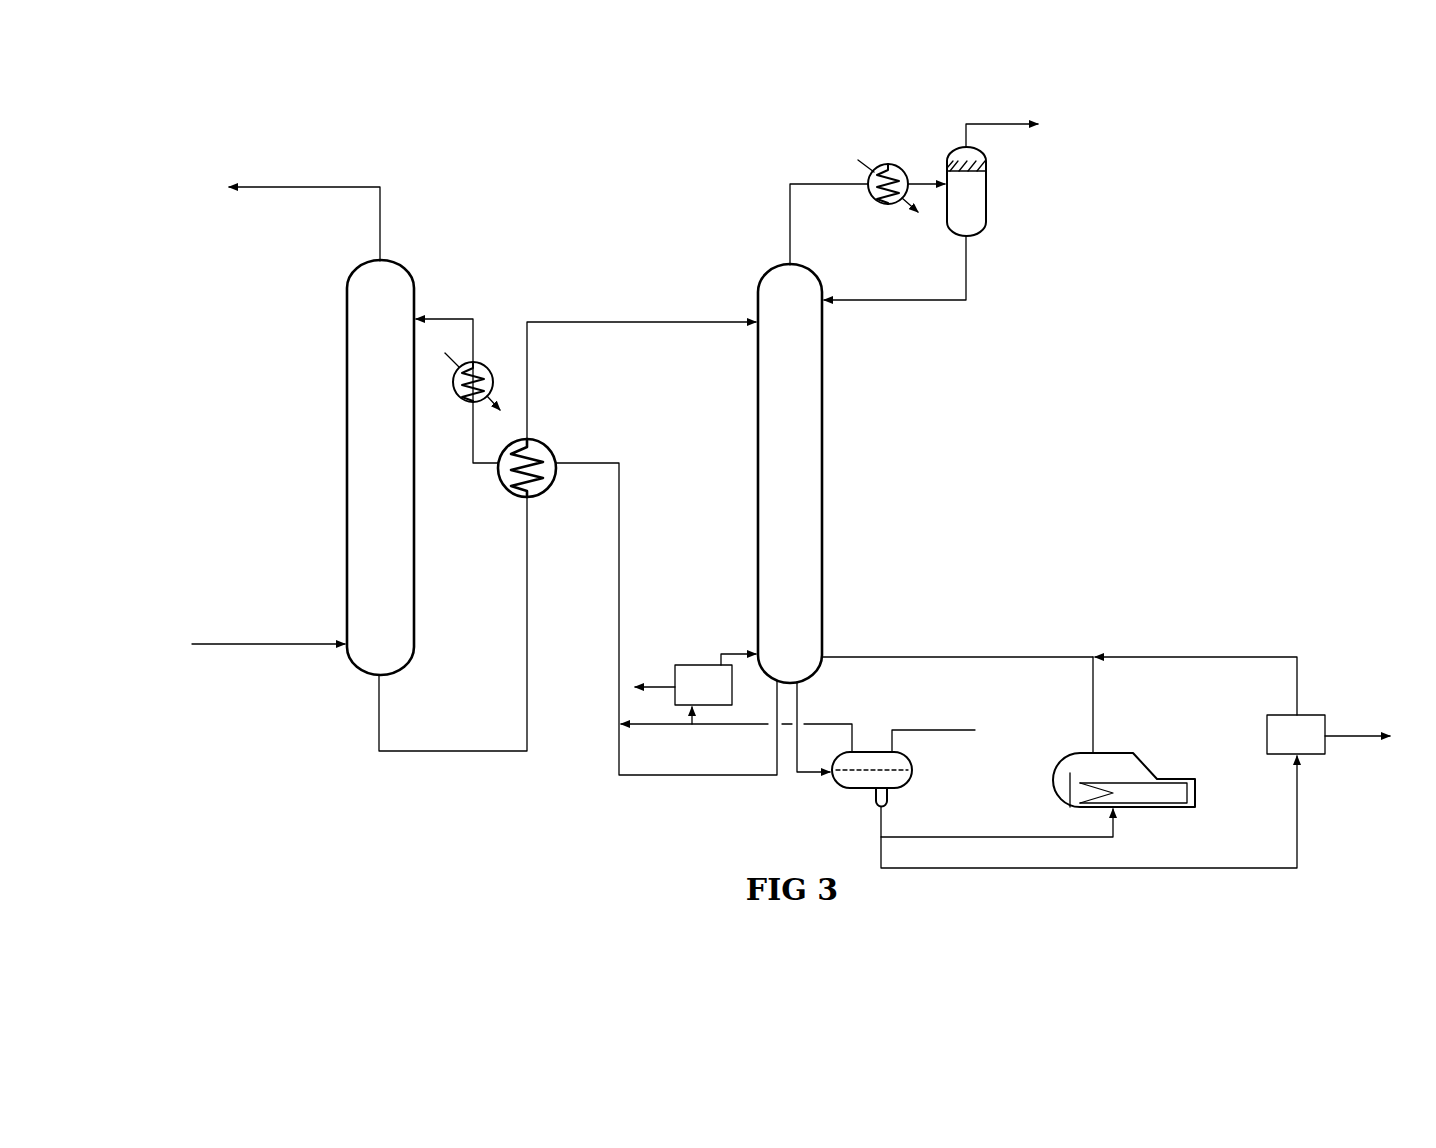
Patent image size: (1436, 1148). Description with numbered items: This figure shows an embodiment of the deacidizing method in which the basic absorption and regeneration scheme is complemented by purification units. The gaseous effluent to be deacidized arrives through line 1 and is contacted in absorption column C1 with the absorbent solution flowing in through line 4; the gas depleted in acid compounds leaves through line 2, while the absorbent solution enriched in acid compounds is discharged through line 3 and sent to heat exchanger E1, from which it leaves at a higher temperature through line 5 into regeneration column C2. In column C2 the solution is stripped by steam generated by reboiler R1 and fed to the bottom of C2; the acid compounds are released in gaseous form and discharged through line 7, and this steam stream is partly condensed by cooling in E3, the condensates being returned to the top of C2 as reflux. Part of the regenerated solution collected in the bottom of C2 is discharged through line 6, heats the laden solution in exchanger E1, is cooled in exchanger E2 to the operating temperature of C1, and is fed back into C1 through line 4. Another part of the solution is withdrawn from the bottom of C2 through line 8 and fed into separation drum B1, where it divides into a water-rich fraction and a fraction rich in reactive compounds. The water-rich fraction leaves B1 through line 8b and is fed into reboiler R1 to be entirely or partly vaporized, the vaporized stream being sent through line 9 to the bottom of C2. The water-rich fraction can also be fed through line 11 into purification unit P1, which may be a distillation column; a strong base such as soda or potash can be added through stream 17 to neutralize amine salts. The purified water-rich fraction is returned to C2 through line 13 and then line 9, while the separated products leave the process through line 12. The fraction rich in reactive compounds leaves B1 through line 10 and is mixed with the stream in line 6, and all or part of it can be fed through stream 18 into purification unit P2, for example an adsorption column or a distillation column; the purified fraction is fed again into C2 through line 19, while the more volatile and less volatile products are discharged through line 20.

The line 1 is at (258, 642).
The line 2 is at (282, 186).
The line 3 is at (456, 750).
The line 4 is at (451, 318).
The line 5 is at (694, 320).
The line 6 is at (709, 777).
The line 7 is at (826, 182).
The line 8 is at (806, 777).
The line 8b is at (1001, 835).
The line 9 is at (873, 654).
The line 10 is at (835, 723).
The line 11 is at (1223, 868).
The line 12 is at (1354, 740).
The line 13 is at (1155, 656).
The stream 17 is at (948, 733).
The stream 18 is at (688, 720).
The line 19 is at (730, 654).
The line 20 is at (655, 685).
The absorption column C1 is at (414, 527).
The regeneration column C2 is at (757, 402).
The heat exchanger E1 is at (556, 446).
The exchanger E2 is at (494, 369).
The cooler E3 is at (896, 163).
The separation drum B1 is at (868, 750).
The reboiler R1 is at (1124, 752).
The purification unit P1 is at (1296, 734).
The purification unit P2 is at (703, 685).